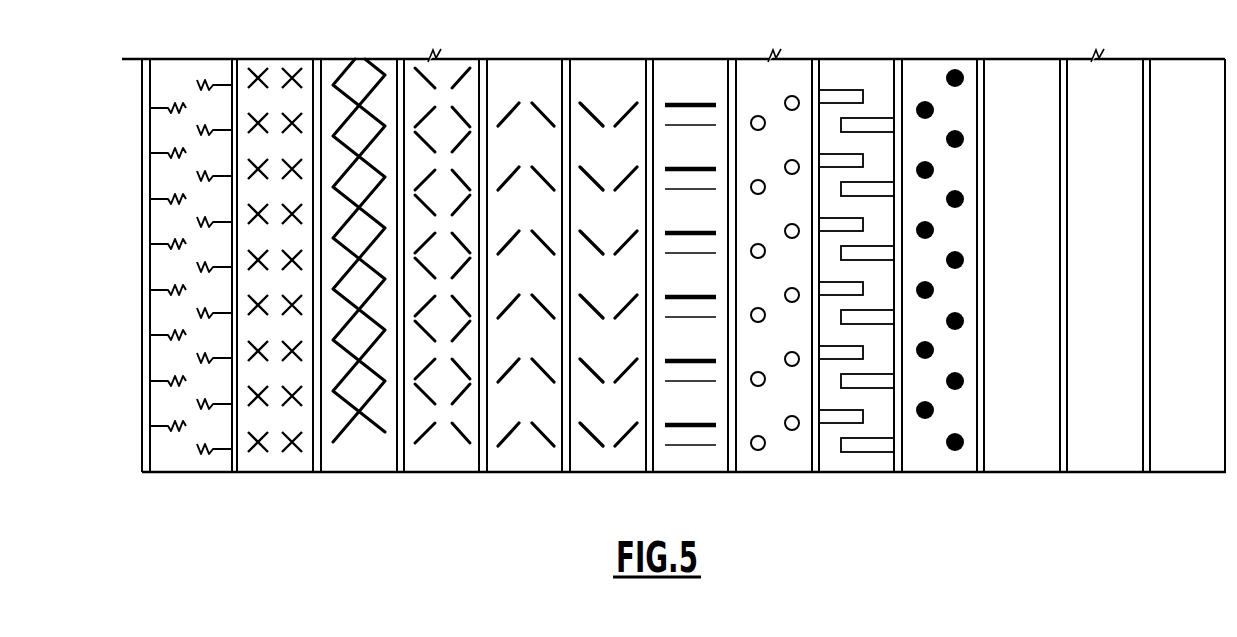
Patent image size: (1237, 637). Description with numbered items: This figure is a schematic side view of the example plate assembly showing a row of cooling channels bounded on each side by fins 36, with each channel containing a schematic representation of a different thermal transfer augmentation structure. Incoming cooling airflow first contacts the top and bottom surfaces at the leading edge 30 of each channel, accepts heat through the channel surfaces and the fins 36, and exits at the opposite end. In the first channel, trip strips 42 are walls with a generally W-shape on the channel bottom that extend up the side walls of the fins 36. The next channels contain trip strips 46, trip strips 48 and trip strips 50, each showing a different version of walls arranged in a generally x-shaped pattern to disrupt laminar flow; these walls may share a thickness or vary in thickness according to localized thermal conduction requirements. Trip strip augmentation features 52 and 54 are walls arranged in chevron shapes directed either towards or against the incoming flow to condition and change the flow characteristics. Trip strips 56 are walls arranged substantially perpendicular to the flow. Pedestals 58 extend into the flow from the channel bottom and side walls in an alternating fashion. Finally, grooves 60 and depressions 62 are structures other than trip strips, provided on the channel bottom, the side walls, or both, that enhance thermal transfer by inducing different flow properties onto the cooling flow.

The leading edge 30 is at (983, 490).
The fins 36 is at (317, 334).
The trip strips 42 is at (186, 474).
The trip strips 46 is at (266, 474).
The trip strips 48 is at (339, 474).
The trip strips 50 is at (428, 474).
The trip strip thermal transfer augmentation features 52 is at (511, 474).
The trip strip thermal transfer augmentation features 54 is at (594, 474).
The thermal transfer augmentation trip strips 56 is at (678, 474).
The pedestals 58 is at (759, 474).
The grooves 60 is at (843, 474).
The depressions 62 is at (926, 474).